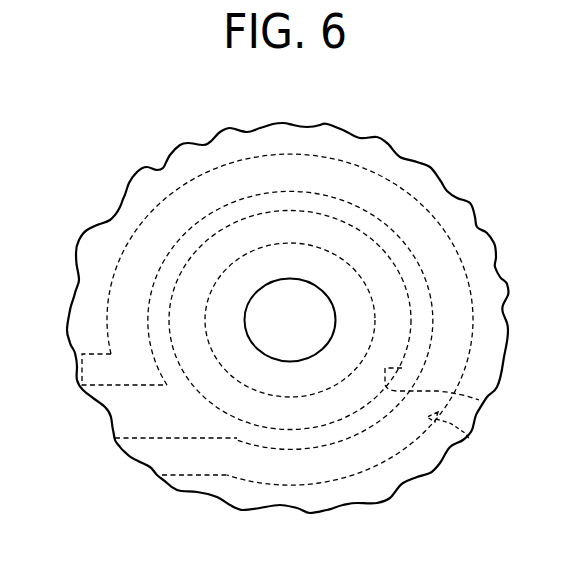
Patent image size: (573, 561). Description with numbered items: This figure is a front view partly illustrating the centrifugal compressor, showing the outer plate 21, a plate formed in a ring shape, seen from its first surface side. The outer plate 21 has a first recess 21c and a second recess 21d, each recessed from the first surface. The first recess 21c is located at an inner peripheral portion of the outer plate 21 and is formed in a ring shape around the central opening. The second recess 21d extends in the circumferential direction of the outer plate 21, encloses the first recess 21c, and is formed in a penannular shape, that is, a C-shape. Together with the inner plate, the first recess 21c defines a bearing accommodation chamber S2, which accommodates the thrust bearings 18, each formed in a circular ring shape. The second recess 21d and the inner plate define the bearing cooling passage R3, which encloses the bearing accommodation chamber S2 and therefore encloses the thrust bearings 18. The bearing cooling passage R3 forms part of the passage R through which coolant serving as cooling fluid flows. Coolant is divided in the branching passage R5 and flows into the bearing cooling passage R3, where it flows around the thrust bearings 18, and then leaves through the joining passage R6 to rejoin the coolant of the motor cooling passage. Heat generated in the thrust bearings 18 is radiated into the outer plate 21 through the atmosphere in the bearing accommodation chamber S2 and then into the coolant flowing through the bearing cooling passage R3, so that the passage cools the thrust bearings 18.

The outer plate 21 is at (441, 197).
The passage R is at (455, 268).
The bearing cooling passage R3 is at (345, 454).
The branching passage R5 is at (168, 459).
The joining passage R6 is at (91, 369).
The bearing accommodation chamber S2 is at (395, 313).
The thrust bearings 18 is at (368, 350).
The first recess 21c is at (479, 400).
The second recess 21d is at (470, 440).